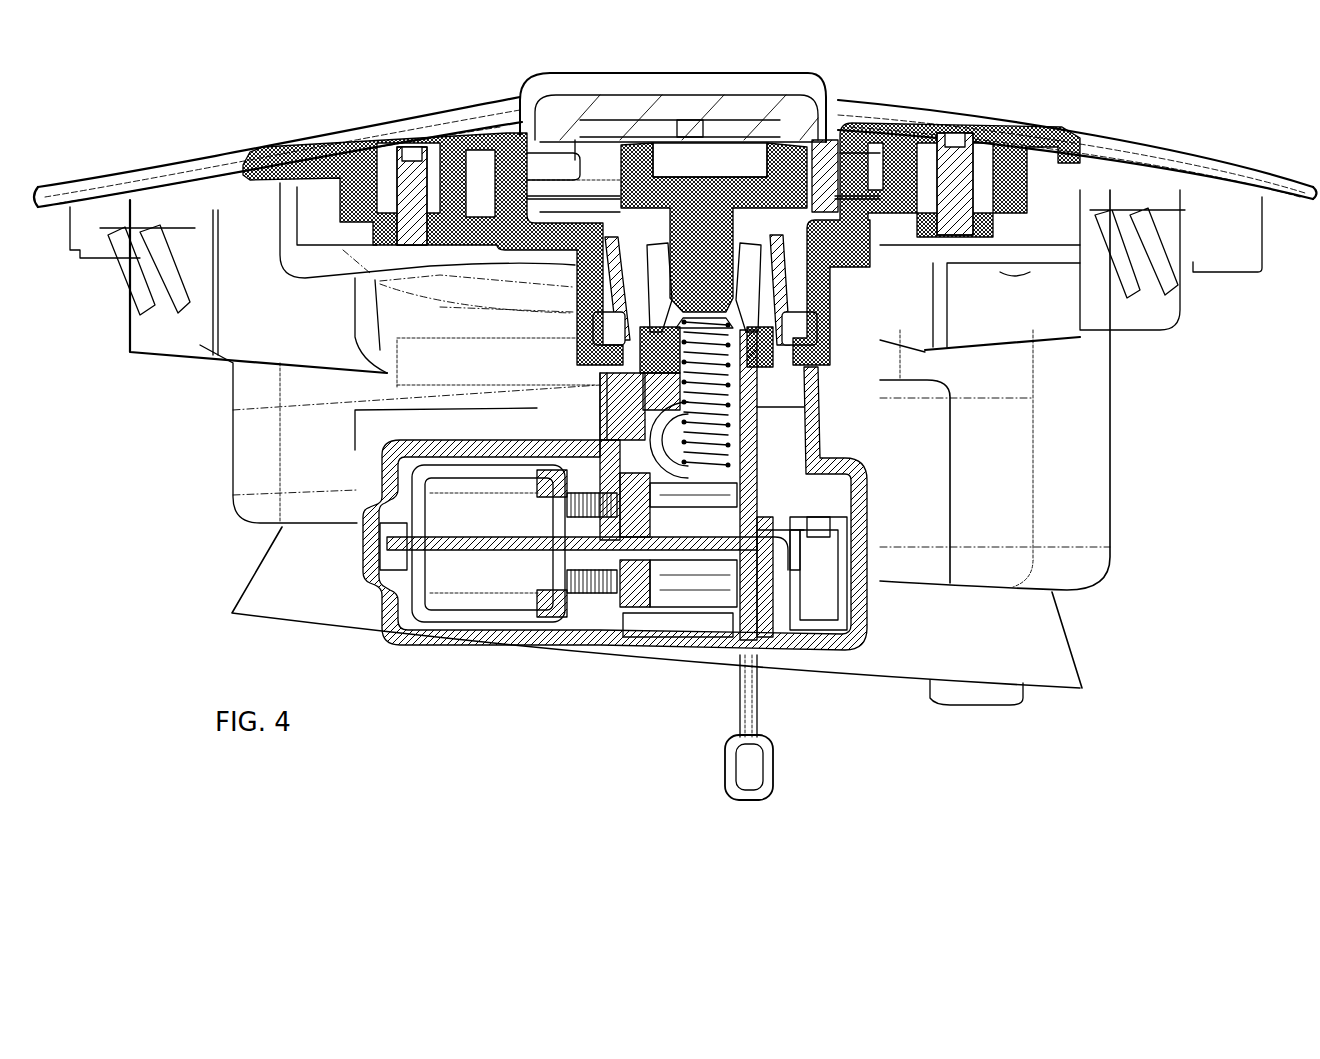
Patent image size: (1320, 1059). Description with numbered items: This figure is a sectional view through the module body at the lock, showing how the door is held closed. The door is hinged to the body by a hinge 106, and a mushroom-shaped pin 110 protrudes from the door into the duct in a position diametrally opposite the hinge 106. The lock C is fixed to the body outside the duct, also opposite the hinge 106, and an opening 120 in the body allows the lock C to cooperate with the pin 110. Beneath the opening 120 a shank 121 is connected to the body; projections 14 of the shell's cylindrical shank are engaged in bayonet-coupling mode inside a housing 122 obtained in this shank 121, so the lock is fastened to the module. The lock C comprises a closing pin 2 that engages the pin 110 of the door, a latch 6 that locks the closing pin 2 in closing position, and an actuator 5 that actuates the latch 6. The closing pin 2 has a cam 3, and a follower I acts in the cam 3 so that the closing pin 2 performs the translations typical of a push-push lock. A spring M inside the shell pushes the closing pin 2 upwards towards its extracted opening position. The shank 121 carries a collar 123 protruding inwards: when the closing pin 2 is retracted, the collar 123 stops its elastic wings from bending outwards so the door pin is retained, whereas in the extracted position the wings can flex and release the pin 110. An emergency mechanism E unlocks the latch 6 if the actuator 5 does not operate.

The hinge 106 is at (717, 80).
The pin 110 is at (740, 190).
The opening 120 is at (613, 237).
The shank 121 is at (370, 273).
The housing 122 is at (923, 130).
The collar 123 is at (420, 228).
The projections 14 is at (930, 350).
The closing pin 2 is at (767, 420).
The cam 3 is at (867, 495).
The spring M is at (400, 440).
The actuator 5 is at (503, 641).
The latch 6 is at (630, 648).
The follower I is at (818, 630).
The emergency mechanism E is at (737, 695).
The lock C is at (876, 633).